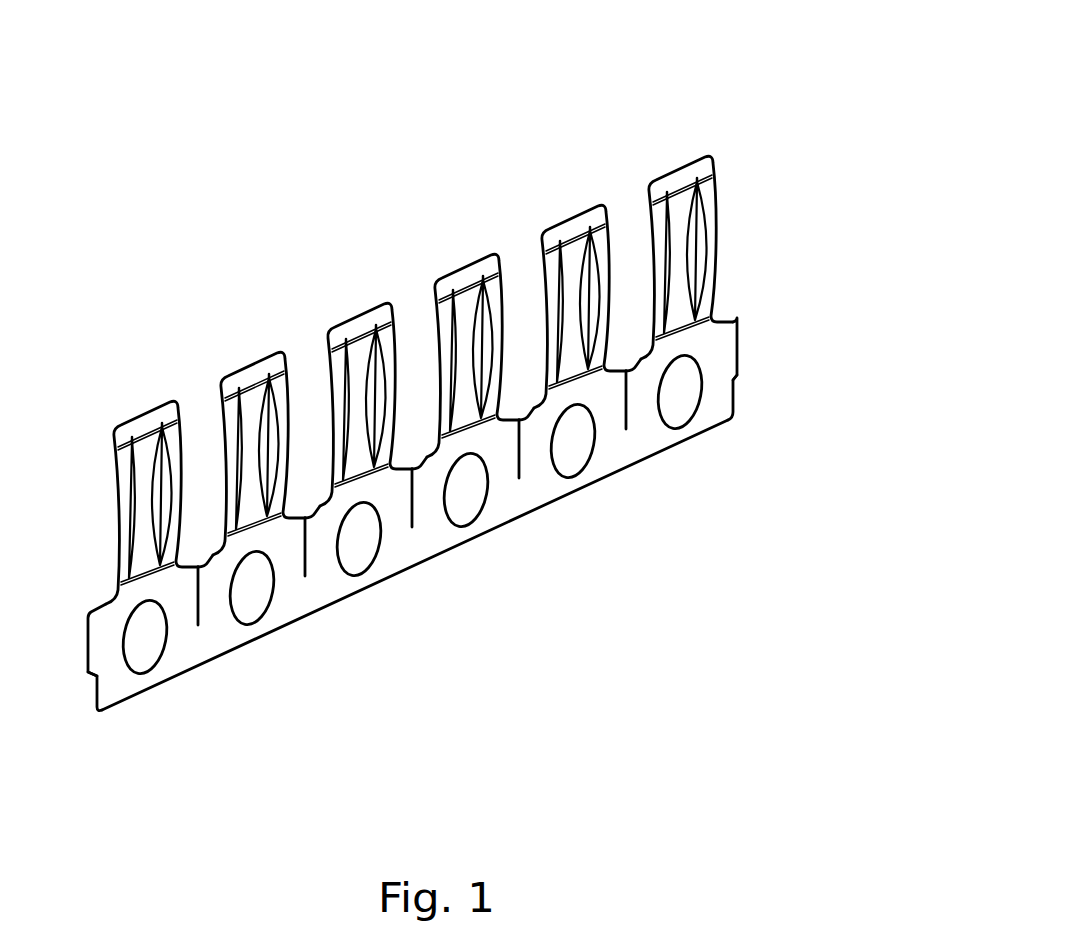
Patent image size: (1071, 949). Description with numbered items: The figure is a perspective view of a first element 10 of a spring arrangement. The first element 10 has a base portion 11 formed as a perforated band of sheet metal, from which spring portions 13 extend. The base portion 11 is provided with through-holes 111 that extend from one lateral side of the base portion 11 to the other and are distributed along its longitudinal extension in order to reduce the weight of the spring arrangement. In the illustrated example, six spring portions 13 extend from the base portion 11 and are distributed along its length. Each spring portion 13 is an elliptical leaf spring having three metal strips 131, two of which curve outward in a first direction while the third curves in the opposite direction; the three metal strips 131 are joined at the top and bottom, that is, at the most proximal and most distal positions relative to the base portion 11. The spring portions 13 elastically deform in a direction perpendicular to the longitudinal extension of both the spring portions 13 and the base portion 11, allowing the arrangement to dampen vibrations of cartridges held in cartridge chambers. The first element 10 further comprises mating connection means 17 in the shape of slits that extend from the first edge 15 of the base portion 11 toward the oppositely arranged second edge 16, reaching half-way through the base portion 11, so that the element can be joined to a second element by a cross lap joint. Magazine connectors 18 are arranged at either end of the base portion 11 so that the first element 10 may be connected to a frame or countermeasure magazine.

The first element 10 is at (190, 228).
The base portion 11 is at (512, 496).
The spring portions 13 is at (655, 175).
The metal strips 131 is at (677, 218).
The first edge 15 is at (318, 503).
The second edge 16 is at (372, 588).
The mating connection means 17 is at (417, 503).
The magazine connectors 18 is at (727, 352).
The through-holes 111 is at (250, 592).